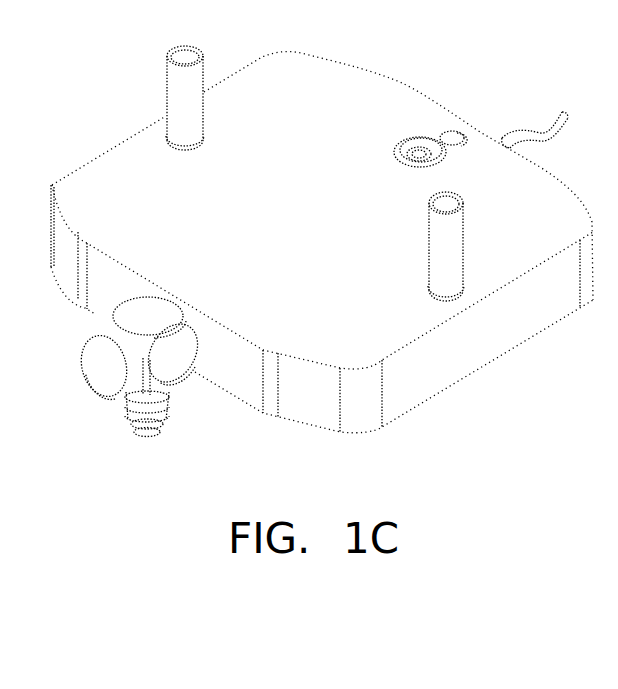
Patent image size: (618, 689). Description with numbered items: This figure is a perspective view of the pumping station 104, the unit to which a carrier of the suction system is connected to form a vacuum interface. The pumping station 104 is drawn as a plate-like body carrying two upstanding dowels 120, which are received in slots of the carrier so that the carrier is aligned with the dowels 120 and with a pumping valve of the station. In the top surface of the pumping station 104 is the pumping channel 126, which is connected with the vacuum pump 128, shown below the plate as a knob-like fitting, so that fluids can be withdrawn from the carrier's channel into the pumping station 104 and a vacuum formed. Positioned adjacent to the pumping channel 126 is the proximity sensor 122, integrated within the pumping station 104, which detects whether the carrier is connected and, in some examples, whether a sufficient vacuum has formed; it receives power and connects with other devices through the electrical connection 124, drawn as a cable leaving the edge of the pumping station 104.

The pumping station 104 is at (91, 97).
The dowels 120 is at (432, 298).
The proximity sensor 122 is at (450, 137).
The electrical connection 124 is at (567, 117).
The pumping channel 126 is at (403, 146).
The vacuum pump 128 is at (93, 385).